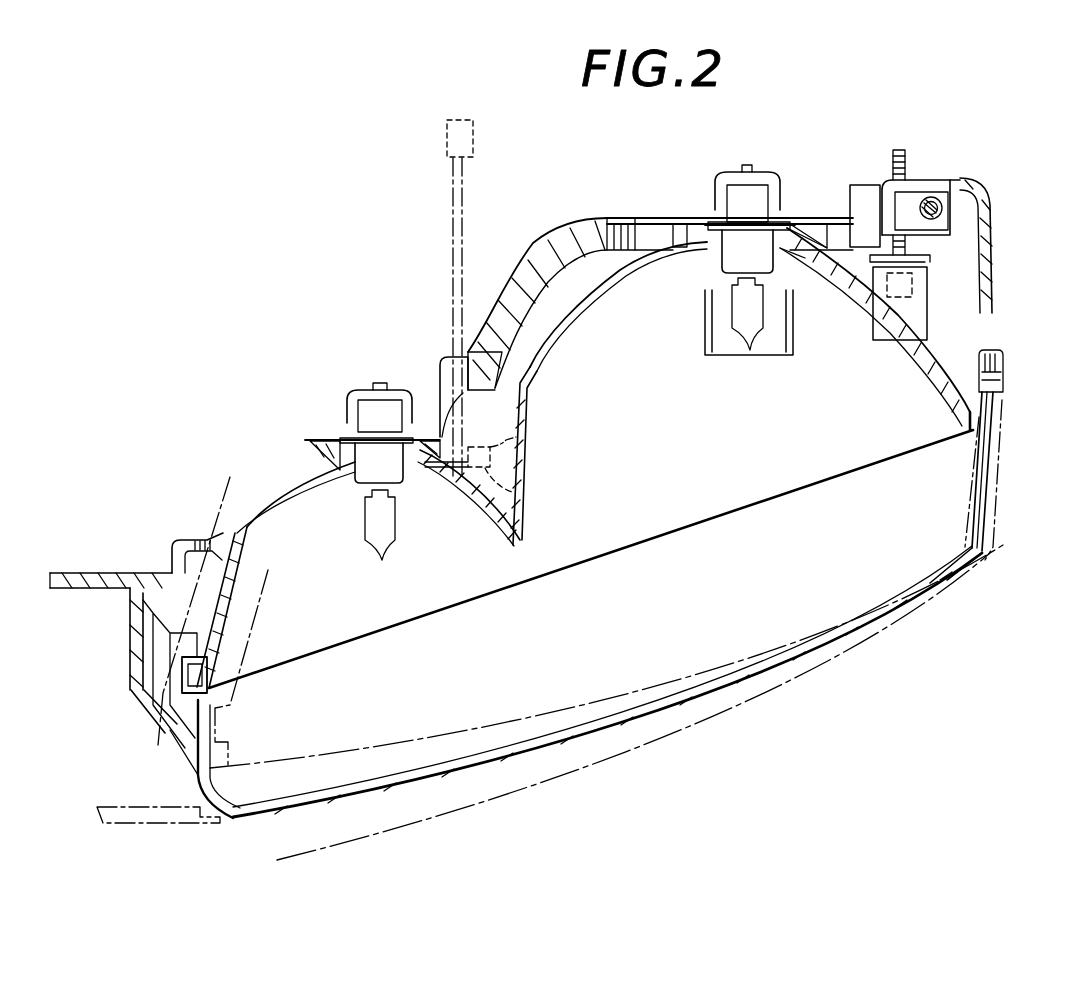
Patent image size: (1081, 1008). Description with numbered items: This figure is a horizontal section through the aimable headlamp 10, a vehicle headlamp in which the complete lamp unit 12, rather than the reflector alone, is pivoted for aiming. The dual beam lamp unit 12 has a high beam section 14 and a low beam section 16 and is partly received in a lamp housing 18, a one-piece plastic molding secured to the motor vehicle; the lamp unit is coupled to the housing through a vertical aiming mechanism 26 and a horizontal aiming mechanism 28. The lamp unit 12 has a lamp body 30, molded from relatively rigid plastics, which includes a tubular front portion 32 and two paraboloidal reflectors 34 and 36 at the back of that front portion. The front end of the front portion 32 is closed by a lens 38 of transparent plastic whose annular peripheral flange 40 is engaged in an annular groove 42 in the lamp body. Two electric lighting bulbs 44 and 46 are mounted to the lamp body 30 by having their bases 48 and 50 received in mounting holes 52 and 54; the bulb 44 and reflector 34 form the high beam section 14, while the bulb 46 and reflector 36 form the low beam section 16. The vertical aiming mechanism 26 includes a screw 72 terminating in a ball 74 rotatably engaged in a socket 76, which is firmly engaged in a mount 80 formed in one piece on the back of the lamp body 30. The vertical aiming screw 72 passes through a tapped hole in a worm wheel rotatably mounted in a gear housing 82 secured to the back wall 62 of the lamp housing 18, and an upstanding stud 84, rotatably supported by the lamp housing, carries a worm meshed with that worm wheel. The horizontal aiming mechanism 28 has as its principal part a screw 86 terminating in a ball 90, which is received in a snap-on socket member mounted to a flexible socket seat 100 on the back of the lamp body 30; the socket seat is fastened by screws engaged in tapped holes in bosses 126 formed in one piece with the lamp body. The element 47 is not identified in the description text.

The aimable headlamp 10 is at (860, 672).
The lamp unit 12 is at (990, 525).
The high beam section 14 is at (283, 775).
The low beam section 16 is at (887, 572).
The lamp housing 18 is at (583, 215).
The vertical aiming mechanism 26 is at (950, 168).
The horizontal aiming mechanism 28 is at (455, 307).
The lamp body 30 is at (276, 563).
The tubular front portion 32 is at (170, 640).
The reflector 34 is at (268, 512).
The reflector 36 is at (600, 303).
The lens 38 is at (580, 742).
The annular peripheral flange 40 is at (988, 462).
The annular groove 42 is at (222, 696).
The electric lighting bulb 44 is at (366, 545).
The electric lighting bulb 46 is at (728, 342).
The support bracket 47 is at (118, 805).
The base 48 is at (355, 482).
The base 50 is at (718, 270).
The mounting hole 52 is at (398, 488).
The mounting hole 54 is at (780, 262).
The back wall 62 is at (930, 176).
The vertical aiming screw 72 is at (893, 165).
The ball 74 is at (890, 315).
The socket 76 is at (905, 280).
The mount 80 is at (920, 298).
The gear housing 82 is at (853, 196).
The stud 84 is at (945, 205).
The horizontal aiming screw 86 is at (467, 218).
The ball 90 is at (490, 495).
The flexible socket seat 100 is at (520, 440).
The boss 126 is at (512, 490).